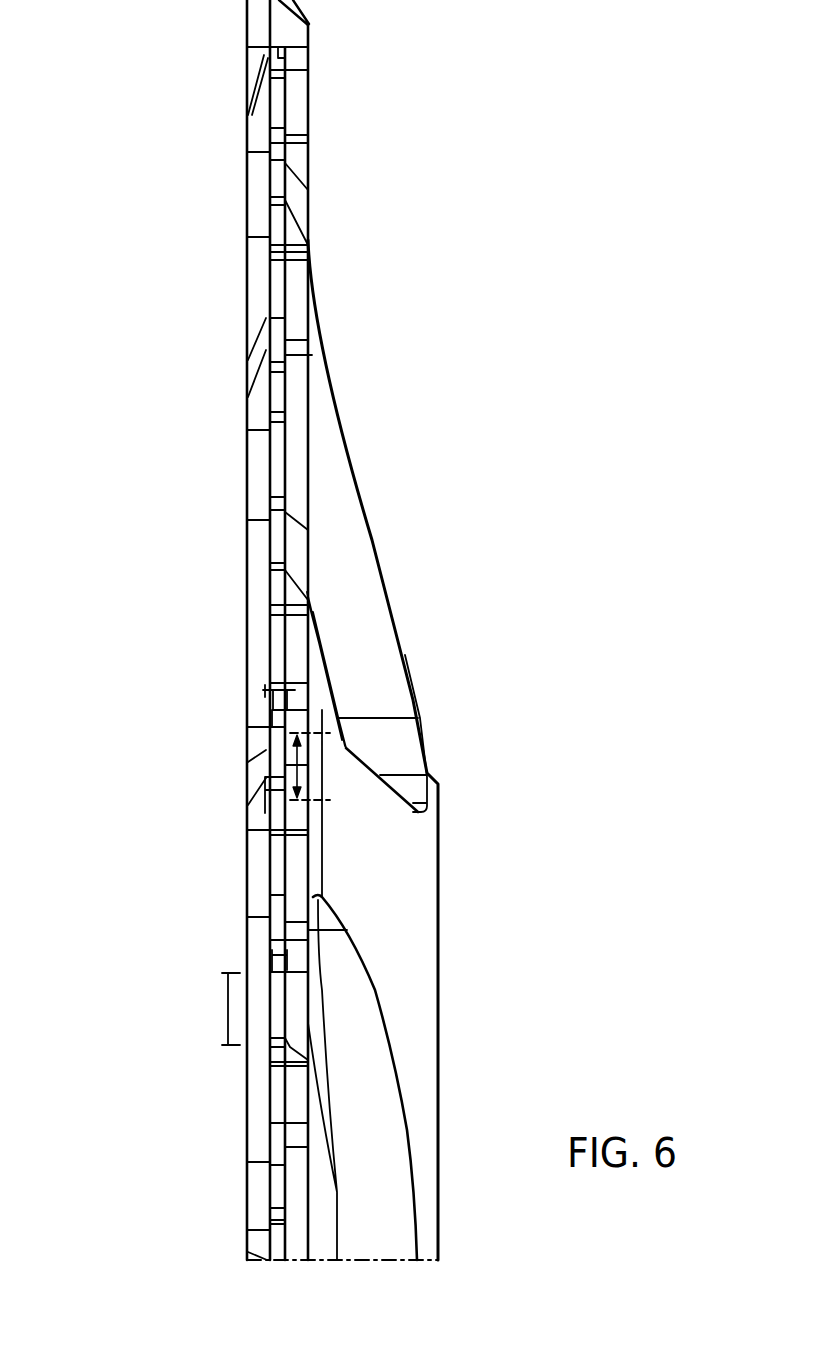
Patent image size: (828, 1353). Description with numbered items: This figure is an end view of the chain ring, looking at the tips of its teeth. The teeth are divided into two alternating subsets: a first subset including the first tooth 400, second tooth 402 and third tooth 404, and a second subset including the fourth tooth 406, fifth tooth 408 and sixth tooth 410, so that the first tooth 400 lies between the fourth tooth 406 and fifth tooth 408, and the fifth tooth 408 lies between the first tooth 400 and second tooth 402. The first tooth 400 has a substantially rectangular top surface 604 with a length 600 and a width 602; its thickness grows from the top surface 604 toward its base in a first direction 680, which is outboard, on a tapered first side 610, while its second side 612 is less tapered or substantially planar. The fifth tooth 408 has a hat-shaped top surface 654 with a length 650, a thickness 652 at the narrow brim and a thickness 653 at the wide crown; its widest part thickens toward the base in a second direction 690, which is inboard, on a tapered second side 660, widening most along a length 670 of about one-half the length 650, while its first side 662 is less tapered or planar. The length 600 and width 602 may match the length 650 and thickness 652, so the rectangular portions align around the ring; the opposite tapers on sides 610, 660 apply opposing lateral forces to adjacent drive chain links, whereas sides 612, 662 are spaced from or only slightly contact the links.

The first tooth 400 is at (288, 1022).
The second tooth 402 is at (275, 535).
The third tooth 404 is at (278, 180).
The fourth tooth 406 is at (265, 1255).
The fifth tooth 408 is at (270, 813).
The sixth tooth 410 is at (278, 335).
The length 600 is at (228, 1012).
The width 602 is at (278, 950).
The top surface 604 is at (278, 1002).
The first side 610 is at (345, 1008).
The second side 612 is at (268, 1030).
The length 650 is at (330, 767).
The thickness 652 is at (283, 708).
The thickness 653 is at (273, 680).
The top surface 654 is at (270, 742).
The second side 660 is at (218, 796).
The first side 662 is at (330, 797).
The length 670 is at (285, 764).
The first direction 680 is at (500, 157).
The second direction 690 is at (140, 157).